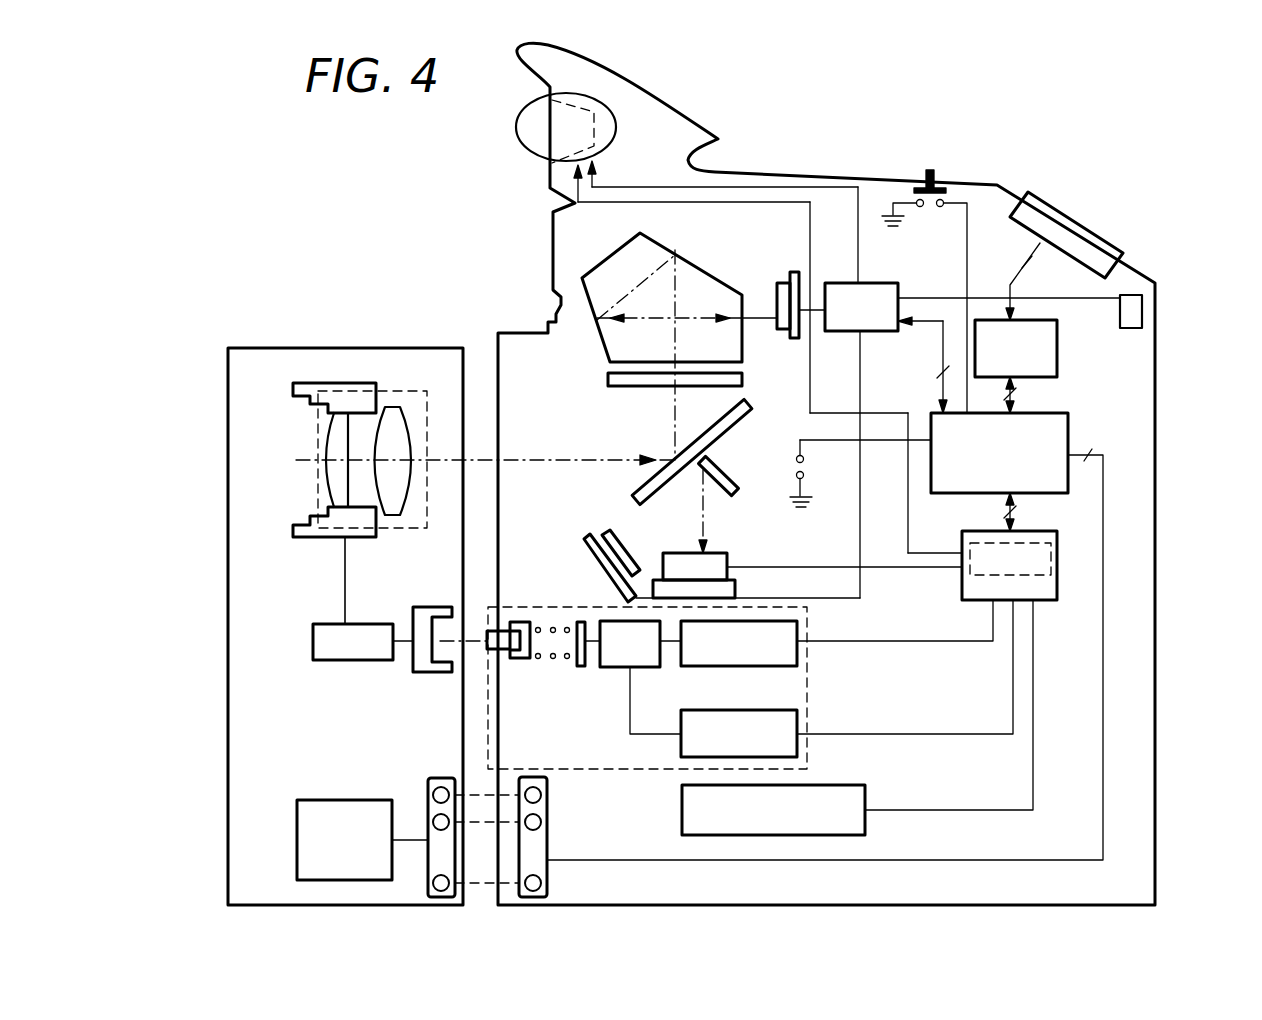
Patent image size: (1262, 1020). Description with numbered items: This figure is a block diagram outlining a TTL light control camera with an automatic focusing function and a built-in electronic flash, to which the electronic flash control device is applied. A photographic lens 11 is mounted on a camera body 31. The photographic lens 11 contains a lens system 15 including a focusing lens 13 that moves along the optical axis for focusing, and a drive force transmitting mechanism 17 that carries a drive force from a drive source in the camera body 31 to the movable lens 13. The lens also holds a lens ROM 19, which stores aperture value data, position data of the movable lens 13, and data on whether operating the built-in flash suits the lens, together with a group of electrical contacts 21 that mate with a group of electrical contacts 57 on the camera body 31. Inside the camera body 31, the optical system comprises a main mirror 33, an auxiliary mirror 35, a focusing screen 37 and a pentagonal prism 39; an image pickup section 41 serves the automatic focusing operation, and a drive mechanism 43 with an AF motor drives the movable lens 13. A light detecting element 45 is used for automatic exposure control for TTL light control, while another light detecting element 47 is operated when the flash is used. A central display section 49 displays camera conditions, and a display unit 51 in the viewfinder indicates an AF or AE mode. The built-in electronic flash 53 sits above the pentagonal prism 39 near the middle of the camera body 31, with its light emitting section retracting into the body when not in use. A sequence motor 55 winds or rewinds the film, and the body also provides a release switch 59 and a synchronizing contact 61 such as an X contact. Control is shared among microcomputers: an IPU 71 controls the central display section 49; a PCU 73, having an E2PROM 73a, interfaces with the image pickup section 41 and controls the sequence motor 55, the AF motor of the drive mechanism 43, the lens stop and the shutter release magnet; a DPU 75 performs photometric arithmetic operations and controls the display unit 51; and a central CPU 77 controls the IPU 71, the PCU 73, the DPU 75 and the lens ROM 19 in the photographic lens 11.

The photographic lens 11 is at (377, 346).
The focusing lens 13 is at (326, 488).
The lens system 15 is at (314, 430).
The drive force transmitting mechanism 17 is at (307, 540).
The lens ROM 19 is at (352, 800).
The group of electrical contacts 21 is at (441, 778).
The camera body 31 is at (1165, 414).
The main mirror 33 is at (752, 405).
The auxiliary mirror 35 is at (740, 490).
The focusing screen 37 is at (608, 380).
The pentagonal prism 39 is at (697, 268).
The image pickup section 41 is at (735, 560).
The drive mechanism 43 is at (818, 683).
The light detecting element 45 is at (795, 272).
The light detecting element 47 is at (588, 540).
The central display section 49 is at (1075, 222).
The display unit 51 is at (1130, 328).
The built-in electronic flash 53 is at (622, 128).
The sequence motor 55 is at (840, 786).
The group of electrical contacts 57 is at (549, 792).
The release switch 59 is at (930, 170).
The synchronizing contact 61 is at (790, 468).
The IPU 71 is at (1057, 346).
The PCU 73 is at (1057, 590).
The E2PROM 73a is at (1036, 538).
The DPU 75 is at (878, 283).
The CPU 77 is at (1068, 433).